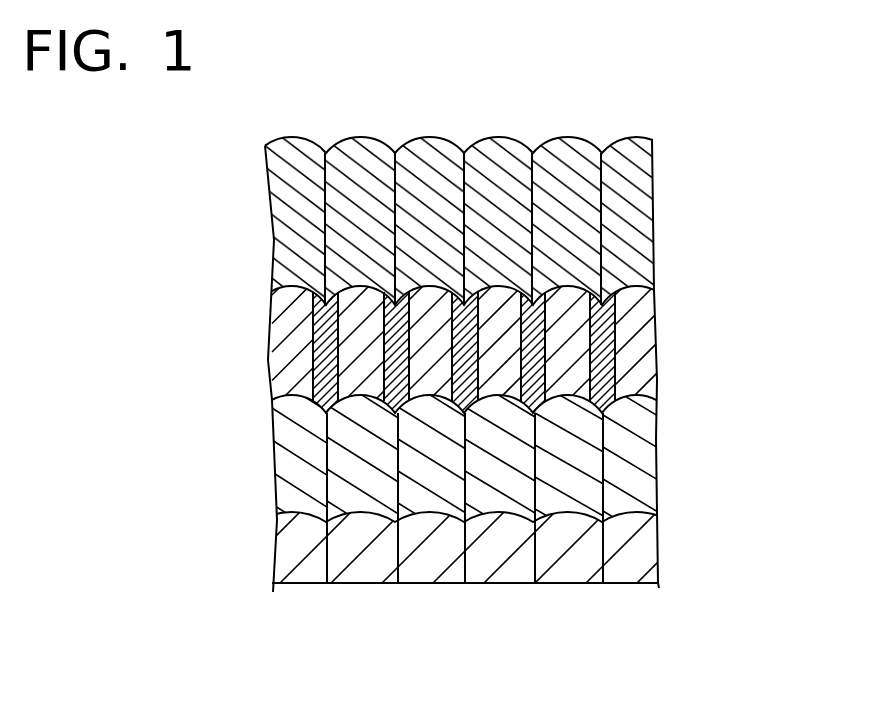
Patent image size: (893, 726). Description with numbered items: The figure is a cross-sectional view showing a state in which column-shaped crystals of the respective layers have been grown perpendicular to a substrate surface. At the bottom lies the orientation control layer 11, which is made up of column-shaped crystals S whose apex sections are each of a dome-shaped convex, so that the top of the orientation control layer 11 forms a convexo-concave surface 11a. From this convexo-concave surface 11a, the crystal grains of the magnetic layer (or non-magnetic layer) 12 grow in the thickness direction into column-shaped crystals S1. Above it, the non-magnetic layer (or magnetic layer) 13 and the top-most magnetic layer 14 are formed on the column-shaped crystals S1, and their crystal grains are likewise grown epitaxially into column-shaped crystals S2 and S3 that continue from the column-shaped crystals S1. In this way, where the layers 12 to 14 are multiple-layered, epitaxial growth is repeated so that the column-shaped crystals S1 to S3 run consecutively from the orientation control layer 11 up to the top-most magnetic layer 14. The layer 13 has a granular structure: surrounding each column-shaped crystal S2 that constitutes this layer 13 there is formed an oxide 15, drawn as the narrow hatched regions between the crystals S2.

The orientation control layer 11 is at (718, 538).
The convexo-concave surface 11a is at (363, 510).
The magnetic layer (or non-magnetic layer) 12 is at (718, 452).
The non-magnetic layer (or magnetic layer) 13 is at (717, 367).
The top-most magnetic layer 14 is at (710, 212).
The oxide 15 is at (697, 320).
The column-shaped crystal S is at (380, 553).
The column-shaped crystals S1 is at (350, 443).
The column-shaped crystals S2 is at (348, 362).
The column-shaped crystals S3 is at (350, 234).